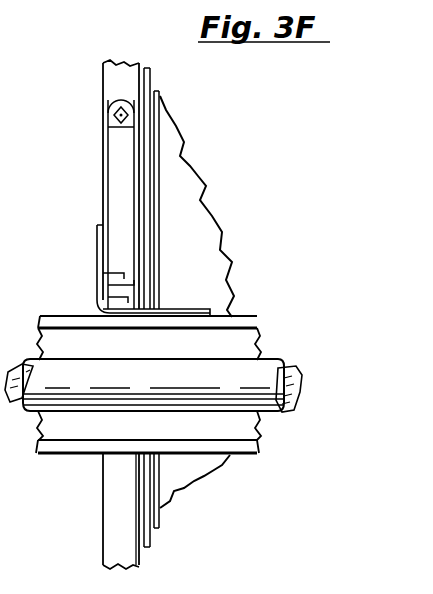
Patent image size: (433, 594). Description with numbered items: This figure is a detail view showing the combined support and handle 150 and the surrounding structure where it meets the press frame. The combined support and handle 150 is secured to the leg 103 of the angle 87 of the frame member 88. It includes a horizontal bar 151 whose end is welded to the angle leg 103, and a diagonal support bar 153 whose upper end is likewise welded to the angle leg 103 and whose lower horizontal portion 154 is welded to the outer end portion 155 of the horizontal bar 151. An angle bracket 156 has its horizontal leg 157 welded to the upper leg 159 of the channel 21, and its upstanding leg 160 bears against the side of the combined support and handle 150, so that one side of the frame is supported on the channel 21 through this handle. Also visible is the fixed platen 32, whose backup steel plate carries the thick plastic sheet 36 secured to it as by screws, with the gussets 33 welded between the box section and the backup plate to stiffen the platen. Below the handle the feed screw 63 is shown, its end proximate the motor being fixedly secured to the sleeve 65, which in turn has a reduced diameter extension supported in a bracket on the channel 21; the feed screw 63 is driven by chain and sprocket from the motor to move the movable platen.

The leg of angle 103 is at (125, 62).
The frame member 88 is at (103, 70).
The angle 87 is at (103, 89).
The thick plastic sheet 36 is at (152, 82).
The fixed platen 32 is at (161, 100).
The gussets 33 is at (193, 178).
The combined support and handle 150 is at (103, 163).
The diagonal support bar 153 is at (108, 181).
The upstanding leg 160 is at (97, 242).
The lower horizontal portion 154 is at (108, 282).
The outer end portion 155 is at (103, 302).
The angle bracket 156 is at (207, 309).
The horizontal leg 157 is at (180, 309).
The horizontal bar 151 is at (128, 328).
The upper leg of channel 159 is at (246, 313).
The feed screw 63 is at (296, 375).
The sleeve 65 is at (287, 414).
The channel 21 is at (243, 455).